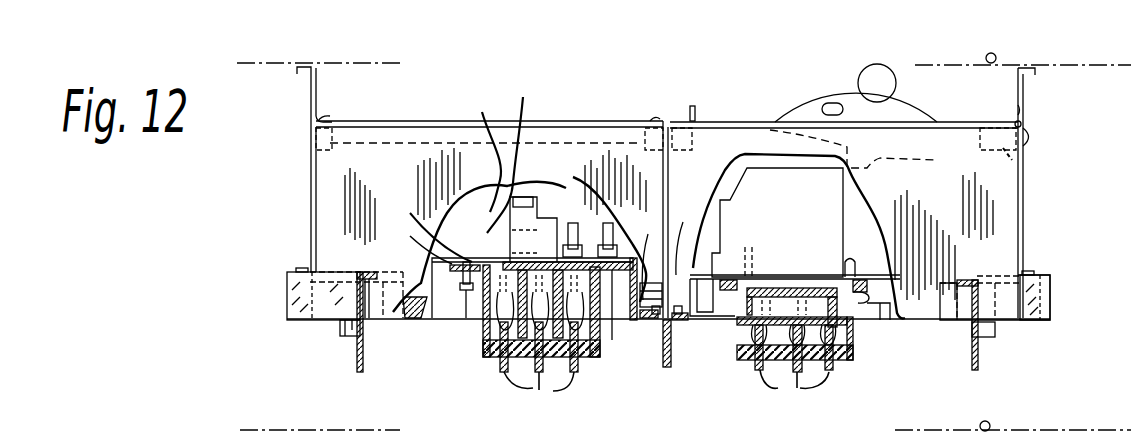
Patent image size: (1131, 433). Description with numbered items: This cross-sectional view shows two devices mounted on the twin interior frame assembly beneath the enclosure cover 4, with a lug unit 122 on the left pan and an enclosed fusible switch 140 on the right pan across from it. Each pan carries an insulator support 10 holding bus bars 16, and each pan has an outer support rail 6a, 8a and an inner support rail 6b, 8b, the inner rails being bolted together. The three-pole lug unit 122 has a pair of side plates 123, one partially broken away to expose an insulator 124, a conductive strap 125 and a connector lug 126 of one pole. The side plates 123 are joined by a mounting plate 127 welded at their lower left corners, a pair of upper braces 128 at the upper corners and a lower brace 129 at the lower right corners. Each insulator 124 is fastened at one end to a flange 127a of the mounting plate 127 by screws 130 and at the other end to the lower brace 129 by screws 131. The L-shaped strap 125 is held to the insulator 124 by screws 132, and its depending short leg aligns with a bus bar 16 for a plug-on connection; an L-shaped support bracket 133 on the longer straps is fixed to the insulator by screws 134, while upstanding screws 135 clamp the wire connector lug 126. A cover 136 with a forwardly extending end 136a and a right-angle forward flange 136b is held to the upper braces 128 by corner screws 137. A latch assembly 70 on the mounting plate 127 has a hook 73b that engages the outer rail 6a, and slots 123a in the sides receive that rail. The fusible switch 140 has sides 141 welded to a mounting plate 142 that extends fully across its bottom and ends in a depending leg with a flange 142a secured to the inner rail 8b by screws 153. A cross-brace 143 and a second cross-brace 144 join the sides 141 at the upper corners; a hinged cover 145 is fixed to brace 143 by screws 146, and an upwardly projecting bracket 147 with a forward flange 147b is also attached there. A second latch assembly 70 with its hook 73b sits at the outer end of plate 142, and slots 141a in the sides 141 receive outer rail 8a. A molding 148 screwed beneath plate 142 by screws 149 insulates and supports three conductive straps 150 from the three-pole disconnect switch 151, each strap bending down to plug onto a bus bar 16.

The cover 4 is at (385, 62).
The outer support rail 6a is at (358, 361).
The inner support rail 6b is at (662, 362).
The outer support rail 8a is at (983, 363).
The inner support rail 8b is at (674, 365).
The insulator support 10 is at (486, 360).
The bus bar 16 is at (666, 365).
The latch assembly 70 is at (282, 289).
The hook 73b is at (342, 331).
The lug unit 122 is at (569, 105).
The side plate 123 is at (476, 160).
The slot 123a is at (380, 320).
The insulator 124 is at (419, 243).
The conductive strap 125 is at (520, 262).
The connector lug 126 is at (516, 153).
The mounting plate 127 is at (350, 272).
The flange 127a is at (420, 322).
The upper brace 128 is at (312, 141).
The lower brace 129 is at (635, 312).
The screw 130 is at (420, 280).
The screw 131 is at (649, 257).
The screw 132 is at (610, 340).
The support bracket 133 is at (429, 230).
The screw 134 is at (464, 294).
The upstanding screw 135 is at (574, 178).
The cover 136 is at (417, 120).
The forwardly extending end 136a is at (310, 104).
The forward flange 136b is at (298, 73).
The screw 137 is at (322, 118).
The enclosed fusible switch 140 is at (813, 93).
The side 141 is at (757, 160).
The slot 141a is at (960, 320).
The mounting plate 142 is at (990, 275).
The flange 142a is at (686, 330).
The cross-brace 143 is at (1012, 167).
The second cross-brace 144 is at (690, 117).
The hinged cover 145 is at (850, 122).
The screw 146 is at (1037, 135).
The bracket 147 is at (1030, 110).
The forward flange 147b is at (1030, 70).
The molding 148 is at (860, 337).
The screw 149 is at (866, 300).
The conductive strap 150 is at (795, 280).
The three-pole disconnect switch 151 is at (810, 208).
The screw 153 is at (689, 237).